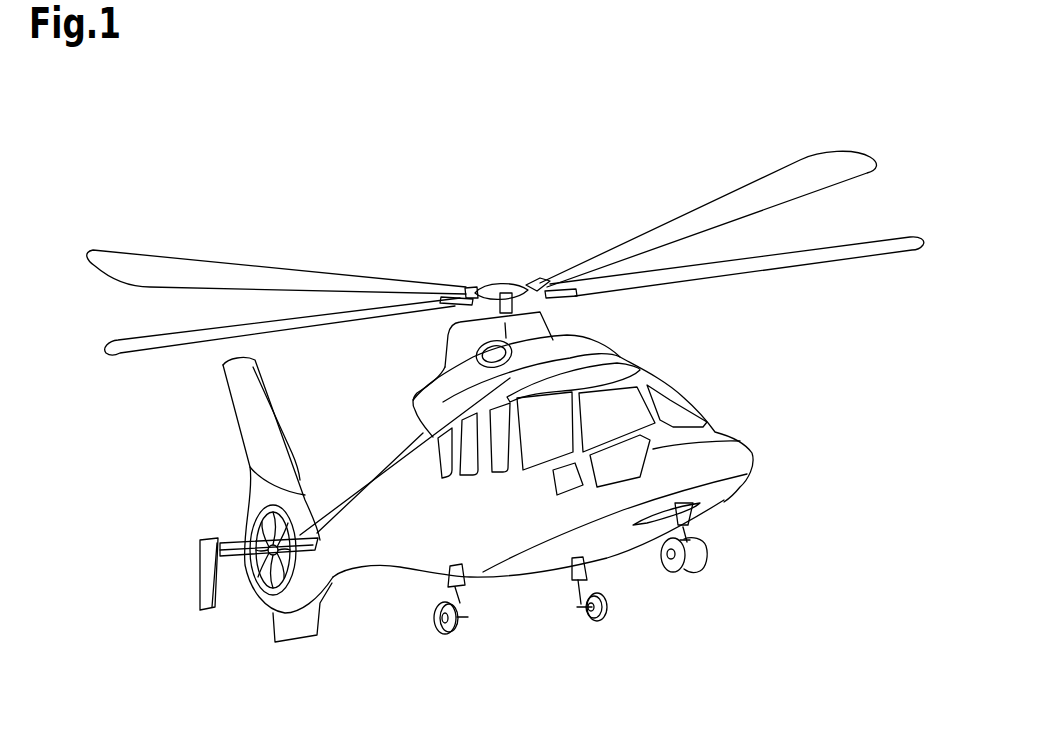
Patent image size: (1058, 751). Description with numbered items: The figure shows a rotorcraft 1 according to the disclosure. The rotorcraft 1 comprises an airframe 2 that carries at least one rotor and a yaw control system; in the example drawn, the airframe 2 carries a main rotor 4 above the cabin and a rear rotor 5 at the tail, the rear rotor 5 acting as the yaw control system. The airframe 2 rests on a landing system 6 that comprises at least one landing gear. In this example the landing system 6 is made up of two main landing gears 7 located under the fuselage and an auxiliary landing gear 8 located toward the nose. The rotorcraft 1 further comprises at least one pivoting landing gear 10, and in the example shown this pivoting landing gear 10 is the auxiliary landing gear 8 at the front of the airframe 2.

The rotorcraft 1 is at (826, 448).
The airframe 2 is at (740, 457).
The main rotor 4 is at (774, 299).
The rear rotor 5 is at (244, 620).
The landing system 6 is at (748, 551).
The main landing gear 7 is at (583, 612).
The auxiliary landing gear 8 is at (670, 572).
The pivoting landing gear 10 is at (684, 537).